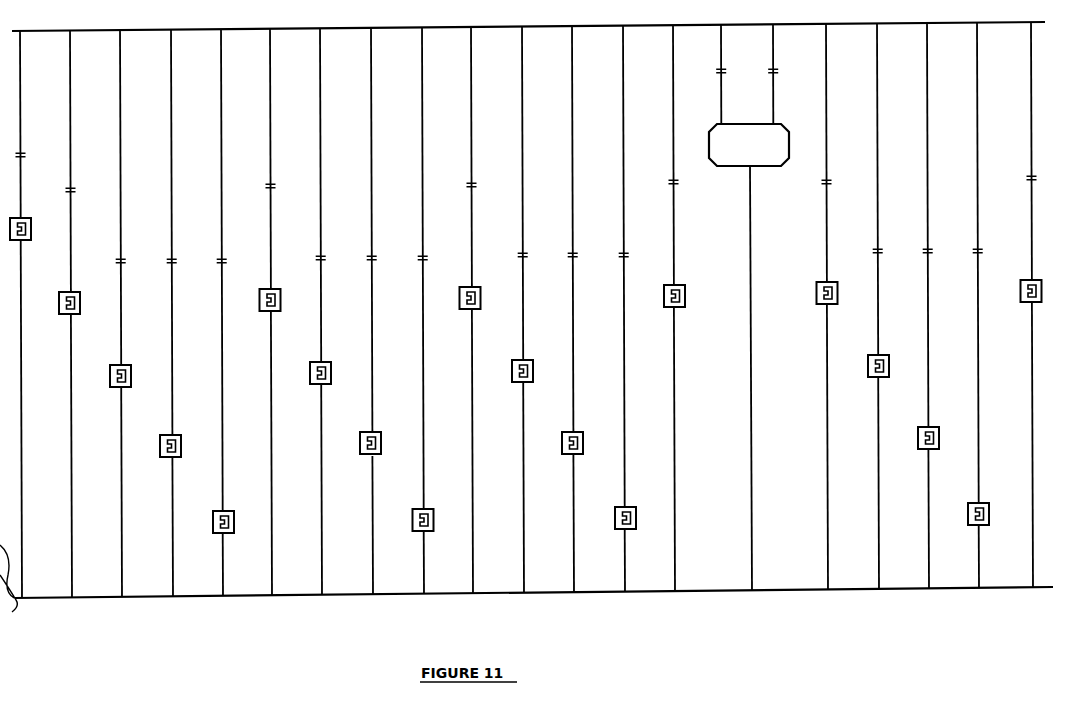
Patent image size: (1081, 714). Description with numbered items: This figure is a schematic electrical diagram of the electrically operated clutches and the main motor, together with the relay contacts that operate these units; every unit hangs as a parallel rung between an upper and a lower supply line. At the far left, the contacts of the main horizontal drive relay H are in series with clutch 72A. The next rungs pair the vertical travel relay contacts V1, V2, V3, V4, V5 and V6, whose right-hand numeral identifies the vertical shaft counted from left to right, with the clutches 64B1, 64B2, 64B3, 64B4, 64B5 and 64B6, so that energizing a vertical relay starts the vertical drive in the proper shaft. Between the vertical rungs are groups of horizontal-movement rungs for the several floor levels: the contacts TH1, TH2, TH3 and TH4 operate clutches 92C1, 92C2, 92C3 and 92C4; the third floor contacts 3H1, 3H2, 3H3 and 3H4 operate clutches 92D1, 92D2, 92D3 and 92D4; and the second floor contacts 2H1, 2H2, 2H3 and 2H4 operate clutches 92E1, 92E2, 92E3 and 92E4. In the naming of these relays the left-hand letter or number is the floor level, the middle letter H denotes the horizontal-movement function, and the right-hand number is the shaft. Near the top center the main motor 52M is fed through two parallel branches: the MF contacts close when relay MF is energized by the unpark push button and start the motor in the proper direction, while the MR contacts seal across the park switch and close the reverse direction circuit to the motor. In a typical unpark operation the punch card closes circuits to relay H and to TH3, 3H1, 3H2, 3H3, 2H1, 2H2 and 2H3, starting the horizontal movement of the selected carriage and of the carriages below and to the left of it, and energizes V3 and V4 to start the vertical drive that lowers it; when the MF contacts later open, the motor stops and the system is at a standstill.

The main horizontal drive relay contact H is at (27, 155).
The clutch 72A is at (31, 314).
The vertical travel relay contact V1 is at (79, 190).
The vertical travel relay contact V2 is at (279, 186).
The vertical travel relay contact V3 is at (480, 185).
The vertical travel relay contact V4 is at (682, 182).
The vertical travel relay contact V5 is at (835, 182).
The vertical travel relay contact V6 is at (1040, 178).
The clutch 64B1 is at (83, 314).
The clutch 64B2 is at (285, 312).
The clutch 64B3 is at (485, 310).
The clutch 64B4 is at (689, 308).
The clutch 64B5 is at (842, 307).
The clutch 64B6 is at (1013, 304).
The horizontal movement relay contact TH1 is at (132, 261).
The horizontal movement relay contact TH2 is at (332, 258).
The horizontal movement relay contact TH3 is at (534, 255).
The horizontal movement relay contact TH4 is at (889, 251).
The third floor horizontal movement relay contact 3H1 is at (184, 261).
The third floor horizontal movement relay contact 3H2 is at (384, 258).
The third floor horizontal movement relay contact 3H3 is at (585, 255).
The third floor horizontal movement relay contact 3H4 is at (940, 251).
The second floor horizontal movement relay contact 2H1 is at (234, 261).
The second floor horizontal movement relay contact 2H2 is at (435, 258).
The second floor horizontal movement relay contact 2H3 is at (636, 255).
The second floor horizontal movement relay contact 2H4 is at (990, 251).
The clutch 92C1 is at (135, 313).
The clutch 92C2 is at (335, 311).
The clutch 92C3 is at (537, 310).
The clutch 92C4 is at (893, 306).
The clutch 92D1 is at (185, 313).
The clutch 92D2 is at (386, 311).
The clutch 92D3 is at (588, 309).
The clutch 92D4 is at (944, 305).
The clutch 92E1 is at (237, 312).
The clutch 92E2 is at (437, 311).
The clutch 92E3 is at (640, 309).
The clutch 92E4 is at (993, 305).
The forward motor relay contacts MF is at (708, 74).
The reverse motor relay contacts MR is at (783, 74).
The main motor 52M is at (749, 357).